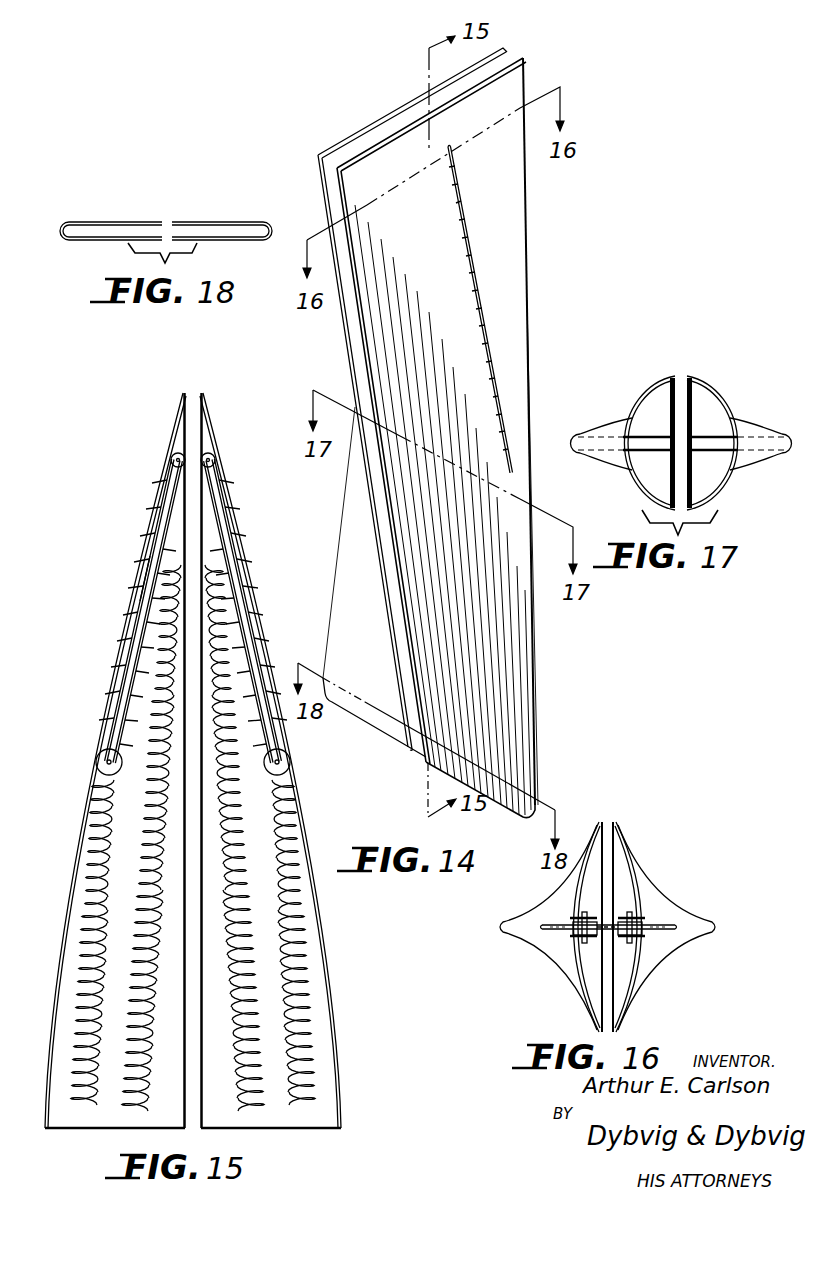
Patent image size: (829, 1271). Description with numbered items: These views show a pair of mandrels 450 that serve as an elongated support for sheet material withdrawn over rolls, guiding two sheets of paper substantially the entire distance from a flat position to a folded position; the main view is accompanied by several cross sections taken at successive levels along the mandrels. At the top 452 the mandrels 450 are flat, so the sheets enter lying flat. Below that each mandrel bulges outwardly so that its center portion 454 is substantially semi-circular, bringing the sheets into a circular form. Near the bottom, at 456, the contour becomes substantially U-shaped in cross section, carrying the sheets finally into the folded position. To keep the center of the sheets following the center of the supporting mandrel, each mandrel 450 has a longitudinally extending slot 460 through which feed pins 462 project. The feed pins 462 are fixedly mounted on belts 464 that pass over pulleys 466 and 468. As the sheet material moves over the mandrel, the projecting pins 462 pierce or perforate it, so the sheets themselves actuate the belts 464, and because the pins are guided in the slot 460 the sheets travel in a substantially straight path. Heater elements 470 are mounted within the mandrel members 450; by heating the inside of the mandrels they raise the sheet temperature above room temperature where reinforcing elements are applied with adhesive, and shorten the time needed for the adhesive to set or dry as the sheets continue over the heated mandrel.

In FIG. 14, the mandrel 450 is at (323, 173).
In FIG. 16, the mandrel 450 is at (527, 915).
In FIG. 14, the top of the mandrel 452 is at (370, 142).
In FIG. 14, the center portion 454 is at (513, 483).
In FIG. 17, the center portion 454 is at (642, 390).
In FIG. 14, the bottom portion of the mandrel 456 is at (358, 712).
In FIG. 17, the bottom portion of the mandrel 456 is at (657, 435).
In FIG. 18, the bottom portion of the mandrel 456 is at (120, 221).
In FIG. 14, the longitudinally extending slot 460 is at (490, 357).
In FIG. 15, the longitudinally extending slot 460 is at (238, 537).
In FIG. 16, the longitudinally extending slot 460 is at (560, 924).
In FIG. 14, the feed pins 462 is at (487, 320).
In FIG. 15, the feed pins 462 is at (130, 588).
In FIG. 16, the feed pins 462 is at (557, 932).
In FIG. 15, the belts 464 is at (120, 623).
In FIG. 15, the pulley 466 is at (171, 461).
In FIG. 16, the pulley 466 is at (625, 910).
In FIG. 15, the pulley 468 is at (96, 762).
In FIG. 15, the heater elements 470 is at (302, 988).